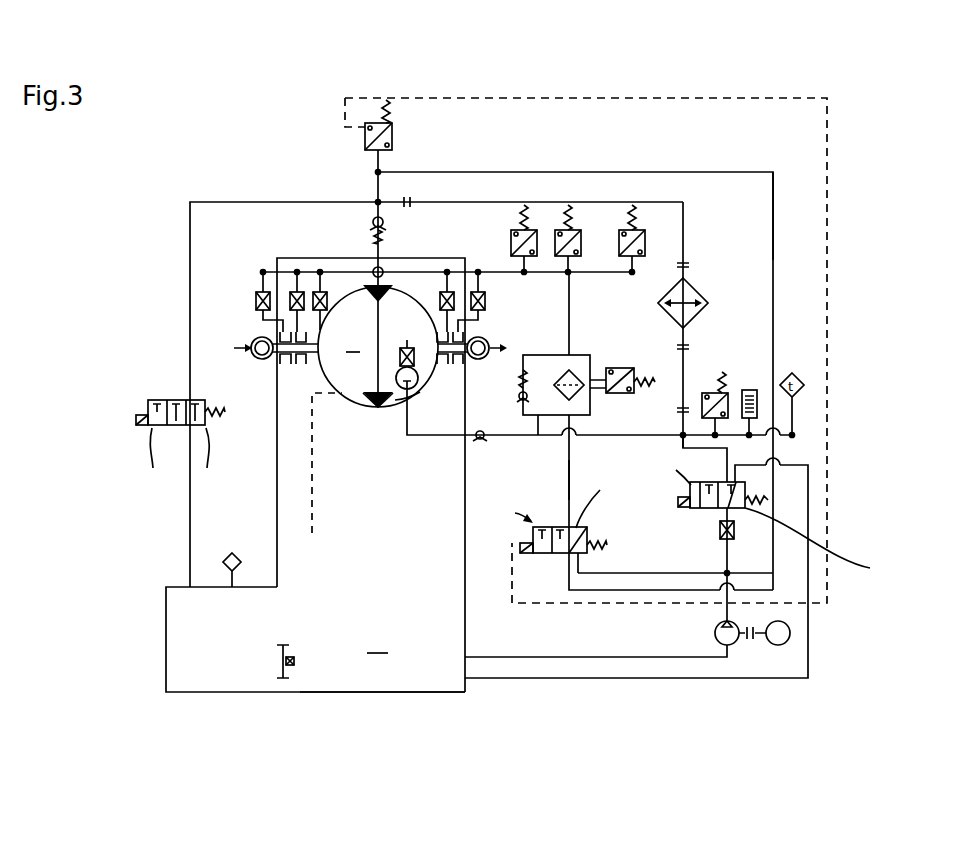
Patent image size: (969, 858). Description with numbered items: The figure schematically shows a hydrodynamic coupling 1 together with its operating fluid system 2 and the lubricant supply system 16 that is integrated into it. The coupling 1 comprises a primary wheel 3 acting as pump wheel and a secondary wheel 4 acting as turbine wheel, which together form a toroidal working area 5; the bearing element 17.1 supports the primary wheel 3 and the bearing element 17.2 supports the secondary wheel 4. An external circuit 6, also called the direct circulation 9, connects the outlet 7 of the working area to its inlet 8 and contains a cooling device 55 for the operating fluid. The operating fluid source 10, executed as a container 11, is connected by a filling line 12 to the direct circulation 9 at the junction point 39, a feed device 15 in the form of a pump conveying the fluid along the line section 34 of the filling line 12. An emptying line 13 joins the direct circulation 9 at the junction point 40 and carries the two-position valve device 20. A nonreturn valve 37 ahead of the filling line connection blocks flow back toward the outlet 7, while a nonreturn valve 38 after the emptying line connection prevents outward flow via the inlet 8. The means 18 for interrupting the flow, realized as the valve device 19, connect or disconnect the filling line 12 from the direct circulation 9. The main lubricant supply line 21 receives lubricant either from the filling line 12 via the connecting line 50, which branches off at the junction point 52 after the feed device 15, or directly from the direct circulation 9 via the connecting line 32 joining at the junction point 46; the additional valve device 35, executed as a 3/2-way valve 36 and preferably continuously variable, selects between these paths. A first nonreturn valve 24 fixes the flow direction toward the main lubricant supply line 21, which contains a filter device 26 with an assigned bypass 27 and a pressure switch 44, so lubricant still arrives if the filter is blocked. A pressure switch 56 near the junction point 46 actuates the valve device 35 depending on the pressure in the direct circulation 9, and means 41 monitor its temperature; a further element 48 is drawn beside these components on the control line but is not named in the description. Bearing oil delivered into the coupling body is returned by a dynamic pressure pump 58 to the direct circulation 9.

The hydrodynamic coupling 1 is at (406, 277).
The operating fluid system 2 is at (592, 197).
The primary wheel 3 is at (363, 400).
The secondary wheel 4 is at (390, 408).
The toroidal working area 5 is at (378, 347).
The external circuit 6 is at (484, 481).
The outlet 7 is at (405, 410).
The inlet 8 is at (383, 283).
The direct circulation 9 is at (447, 438).
The operating fluid source 10 is at (315, 657).
The container 11 is at (385, 692).
The filling line 12 is at (745, 465).
The emptying line 13 is at (190, 258).
The feed device 15 is at (745, 648).
The lubricant supply system 16 is at (690, 226).
The bearing element 17.1 is at (290, 363).
The bearing element 17.2 is at (462, 285).
The means for interrupting the flow of operating fluid 18 is at (700, 517).
The valve device 19 is at (768, 500).
The valve device 20 is at (178, 397).
The main lubricant supply line 21 is at (603, 274).
The first nonreturn valve 24 is at (522, 380).
The filter device 26 is at (580, 372).
The bypass 27 is at (538, 415).
The connecting line 32 is at (773, 220).
The line section 34 is at (568, 490).
The valve device 35 is at (559, 508).
The 3/2-way valve 36 is at (574, 540).
The nonreturn valve 37 is at (480, 440).
The nonreturn valve 38 is at (370, 218).
The junction point 39 is at (687, 437).
The junction point 40 is at (378, 202).
The means for monitoring the temperature 41 is at (757, 388).
The pressure switch 44 is at (627, 367).
The junction point 46 is at (380, 172).
The spring 48 is at (722, 372).
The connecting line 50 is at (637, 573).
The junction point 52 is at (740, 573).
The cooling device 55 is at (710, 287).
The pressure switch 56 is at (392, 127).
The dynamic pressure pump 58 is at (420, 392).